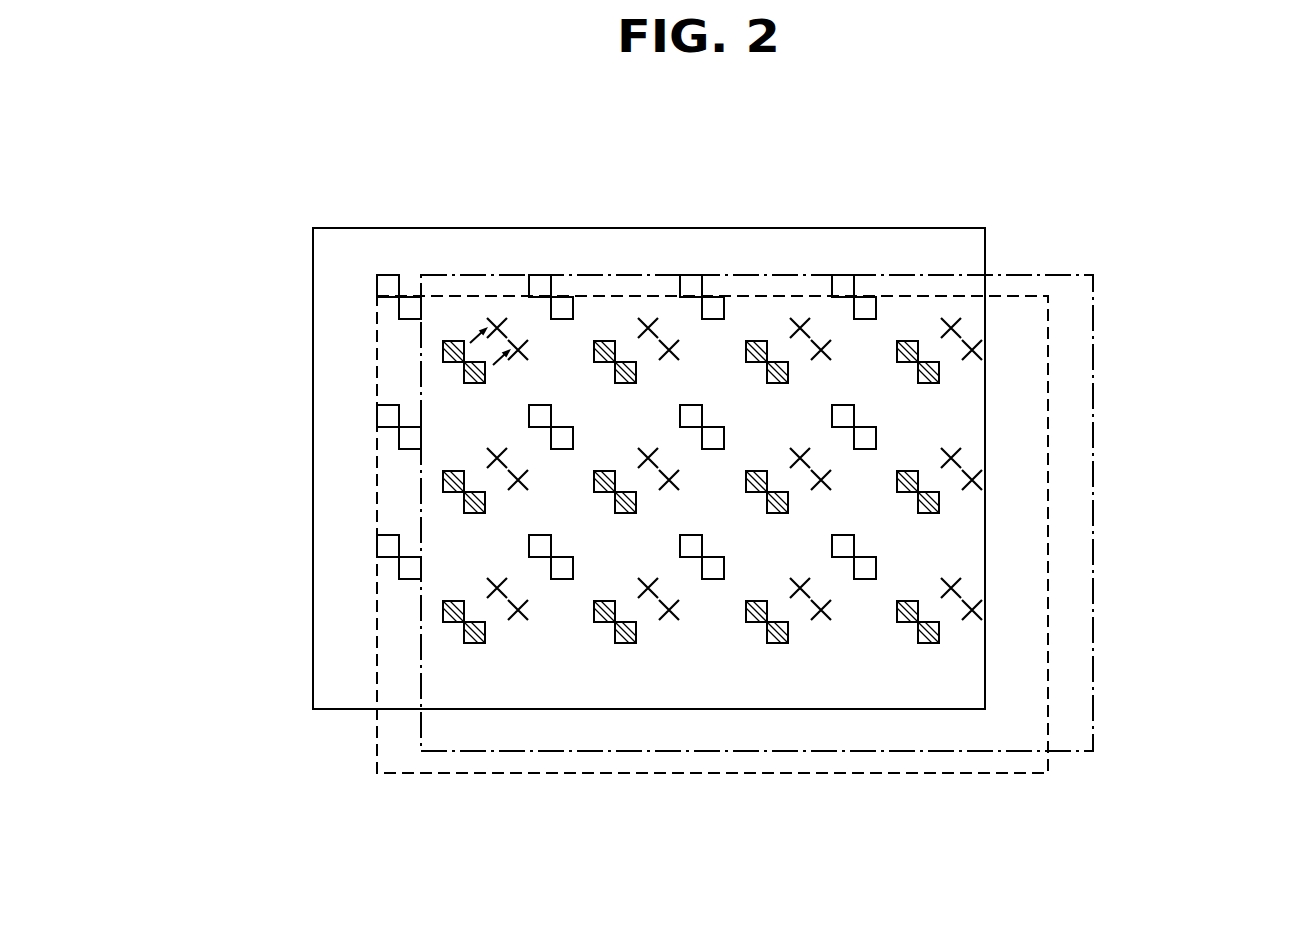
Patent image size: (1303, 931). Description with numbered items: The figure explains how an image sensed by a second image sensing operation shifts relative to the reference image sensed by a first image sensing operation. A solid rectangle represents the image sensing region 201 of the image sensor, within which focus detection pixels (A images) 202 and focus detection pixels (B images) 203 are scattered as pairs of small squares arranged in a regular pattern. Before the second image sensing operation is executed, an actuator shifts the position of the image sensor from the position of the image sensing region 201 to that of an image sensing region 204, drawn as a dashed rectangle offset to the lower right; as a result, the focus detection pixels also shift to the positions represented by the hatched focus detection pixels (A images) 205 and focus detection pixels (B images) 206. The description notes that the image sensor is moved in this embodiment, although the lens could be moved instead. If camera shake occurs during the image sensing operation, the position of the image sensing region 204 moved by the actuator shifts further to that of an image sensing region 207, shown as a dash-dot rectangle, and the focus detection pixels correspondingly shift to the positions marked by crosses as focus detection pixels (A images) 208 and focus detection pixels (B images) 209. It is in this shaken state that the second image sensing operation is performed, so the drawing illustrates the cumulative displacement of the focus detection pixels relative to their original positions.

The image sensing region 201 is at (784, 227).
The focus detection pixel (A image) 202 is at (385, 262).
The focus detection pixel (B image) 203 is at (410, 292).
The image sensing region 204 is at (1028, 296).
The focus detection pixel (A image) 205 is at (442, 352).
The focus detection pixel (B image) 206 is at (464, 373).
The image sensing region 207 is at (1093, 370).
The focus detection pixel (A image) 208 is at (487, 580).
The focus detection pixel (B image) 209 is at (527, 622).